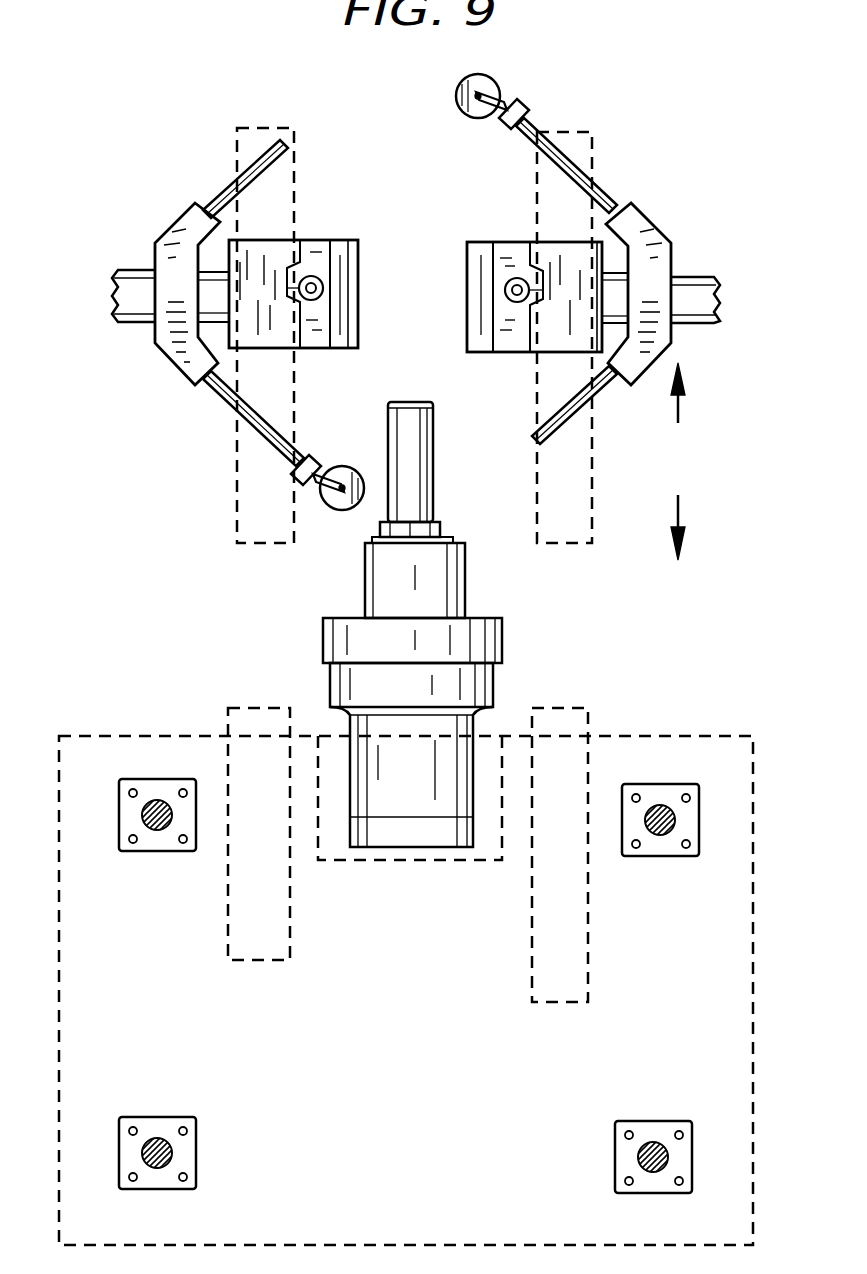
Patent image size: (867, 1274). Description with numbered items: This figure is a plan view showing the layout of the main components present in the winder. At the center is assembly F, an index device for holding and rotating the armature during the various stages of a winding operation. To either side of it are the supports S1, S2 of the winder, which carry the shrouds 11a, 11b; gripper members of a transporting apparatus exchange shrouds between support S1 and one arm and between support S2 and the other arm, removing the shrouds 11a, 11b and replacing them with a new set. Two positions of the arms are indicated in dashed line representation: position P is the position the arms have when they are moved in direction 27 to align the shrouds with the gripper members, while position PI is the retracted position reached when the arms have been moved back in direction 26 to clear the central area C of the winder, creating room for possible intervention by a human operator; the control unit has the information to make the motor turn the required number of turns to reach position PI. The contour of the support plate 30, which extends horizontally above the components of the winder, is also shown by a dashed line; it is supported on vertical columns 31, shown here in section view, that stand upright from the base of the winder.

The central area C is at (170, 468).
The position P is at (263, 125).
The support S2 is at (315, 267).
The support S1 is at (507, 269).
The shroud 11a is at (348, 263).
The shroud 11b is at (468, 318).
The assembly F is at (447, 567).
The position PI is at (275, 703).
The support plate 30 is at (753, 823).
The vertical columns 31 is at (157, 830).
The direction 26 is at (680, 507).
The direction 27 is at (682, 408).